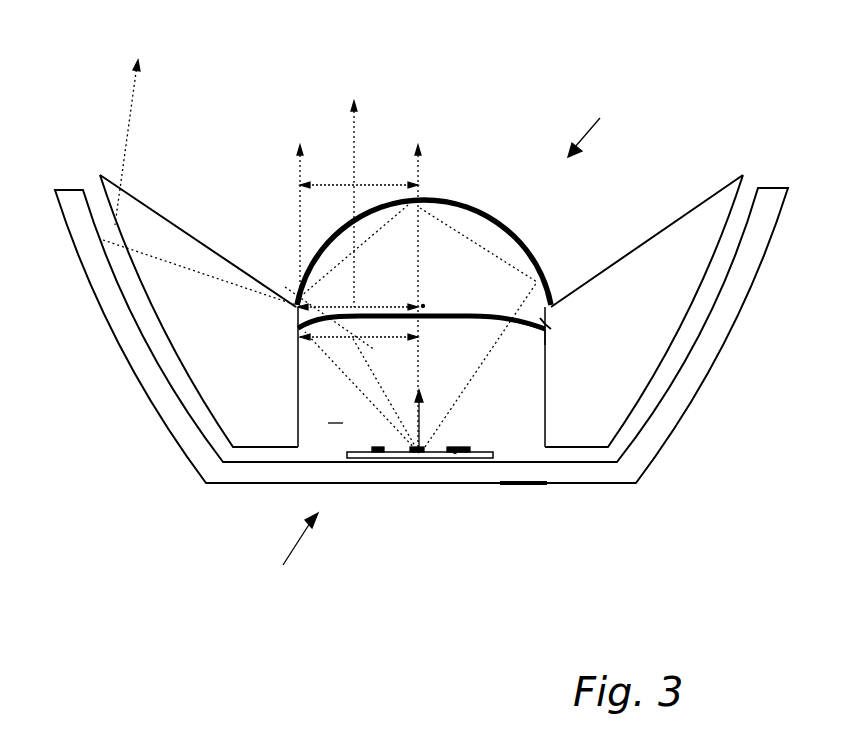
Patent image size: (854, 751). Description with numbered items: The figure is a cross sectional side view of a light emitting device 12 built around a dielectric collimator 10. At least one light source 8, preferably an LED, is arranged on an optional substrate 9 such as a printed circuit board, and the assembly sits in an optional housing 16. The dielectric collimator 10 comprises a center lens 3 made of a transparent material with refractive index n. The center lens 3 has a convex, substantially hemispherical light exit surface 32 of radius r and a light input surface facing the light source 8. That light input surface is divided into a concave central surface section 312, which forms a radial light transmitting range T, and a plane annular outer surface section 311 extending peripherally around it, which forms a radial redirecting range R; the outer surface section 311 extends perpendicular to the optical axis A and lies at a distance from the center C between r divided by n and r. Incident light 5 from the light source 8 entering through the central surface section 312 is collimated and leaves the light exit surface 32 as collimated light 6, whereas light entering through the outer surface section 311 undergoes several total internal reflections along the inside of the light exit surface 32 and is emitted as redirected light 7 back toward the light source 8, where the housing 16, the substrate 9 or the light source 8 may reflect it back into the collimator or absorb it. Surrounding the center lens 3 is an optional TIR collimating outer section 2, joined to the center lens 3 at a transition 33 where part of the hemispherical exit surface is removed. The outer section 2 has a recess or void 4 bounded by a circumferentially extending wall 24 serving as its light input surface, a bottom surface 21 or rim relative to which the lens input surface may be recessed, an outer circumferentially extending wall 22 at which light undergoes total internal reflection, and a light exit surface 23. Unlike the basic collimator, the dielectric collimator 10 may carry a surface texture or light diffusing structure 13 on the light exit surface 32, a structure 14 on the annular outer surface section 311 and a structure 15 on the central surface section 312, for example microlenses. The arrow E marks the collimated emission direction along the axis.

The TIR collimating outer section 2 is at (155, 262).
The center lens 3 is at (453, 260).
The recess or void 4 is at (335, 411).
The incident light 5 is at (373, 405).
The collimated light 6 is at (328, 157).
The redirected light 7 is at (487, 470).
The light source 8 is at (360, 598).
The substrate 9 is at (437, 458).
The dielectric collimator 10 is at (595, 126).
The light emitting device 12 is at (288, 549).
The surface texture and/or light diffusing structure 13 is at (535, 225).
The surface texture and/or light diffusing structure 14 is at (547, 343).
The surface texture and/or light diffusing structure 15 is at (463, 330).
The housing 16 is at (640, 465).
The bottom surface 21 is at (268, 447).
The outer circumferentially extending wall 22 is at (112, 250).
The light exit surface 23 is at (192, 236).
The circumferentially extending wall 24 is at (547, 383).
The light exit surface 32 is at (435, 198).
The transition 33 is at (548, 318).
The annular outer surface section 311 is at (526, 333).
The central surface section 312 is at (480, 330).
The optical axis A is at (452, 457).
The center C is at (423, 305).
The emission axis E is at (350, 185).
The radial redirecting range R is at (345, 302).
The radial light transmitting range T is at (390, 338).